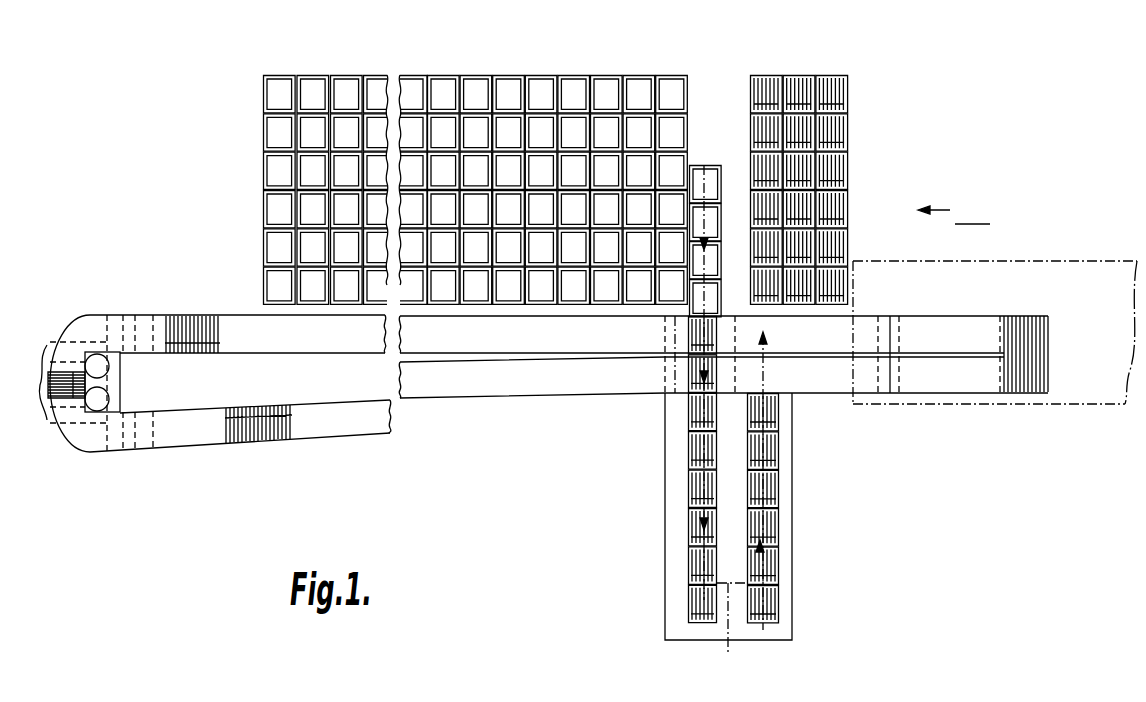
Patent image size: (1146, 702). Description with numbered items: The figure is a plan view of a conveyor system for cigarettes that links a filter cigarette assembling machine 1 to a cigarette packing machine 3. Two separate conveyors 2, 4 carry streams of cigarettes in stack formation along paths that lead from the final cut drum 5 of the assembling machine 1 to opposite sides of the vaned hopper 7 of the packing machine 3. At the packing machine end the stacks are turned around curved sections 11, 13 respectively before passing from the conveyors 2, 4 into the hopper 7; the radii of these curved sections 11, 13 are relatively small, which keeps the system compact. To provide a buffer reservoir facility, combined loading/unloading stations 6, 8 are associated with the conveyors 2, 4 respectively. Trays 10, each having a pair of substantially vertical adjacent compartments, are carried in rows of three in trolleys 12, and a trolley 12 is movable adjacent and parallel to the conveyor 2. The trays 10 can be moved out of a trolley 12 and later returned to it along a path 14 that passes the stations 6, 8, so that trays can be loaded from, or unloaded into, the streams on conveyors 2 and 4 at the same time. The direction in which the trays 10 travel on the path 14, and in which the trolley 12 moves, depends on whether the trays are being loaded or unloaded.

The filter cigarette assembling machine 1 is at (1050, 275).
The conveyor 2 is at (806, 351).
The cigarette packing machine 3 is at (47, 345).
The conveyor 4 is at (832, 389).
The final cut drum 5 is at (1030, 395).
The combined loading/unloading station 6 is at (725, 318).
The vaned hopper 7 is at (88, 386).
The combined loading/unloading station 8 is at (668, 380).
The trays 10 is at (838, 95).
The curved section 11 is at (88, 316).
The trolley 12 is at (496, 73).
The curved section 13 is at (85, 442).
The path 14 is at (728, 507).